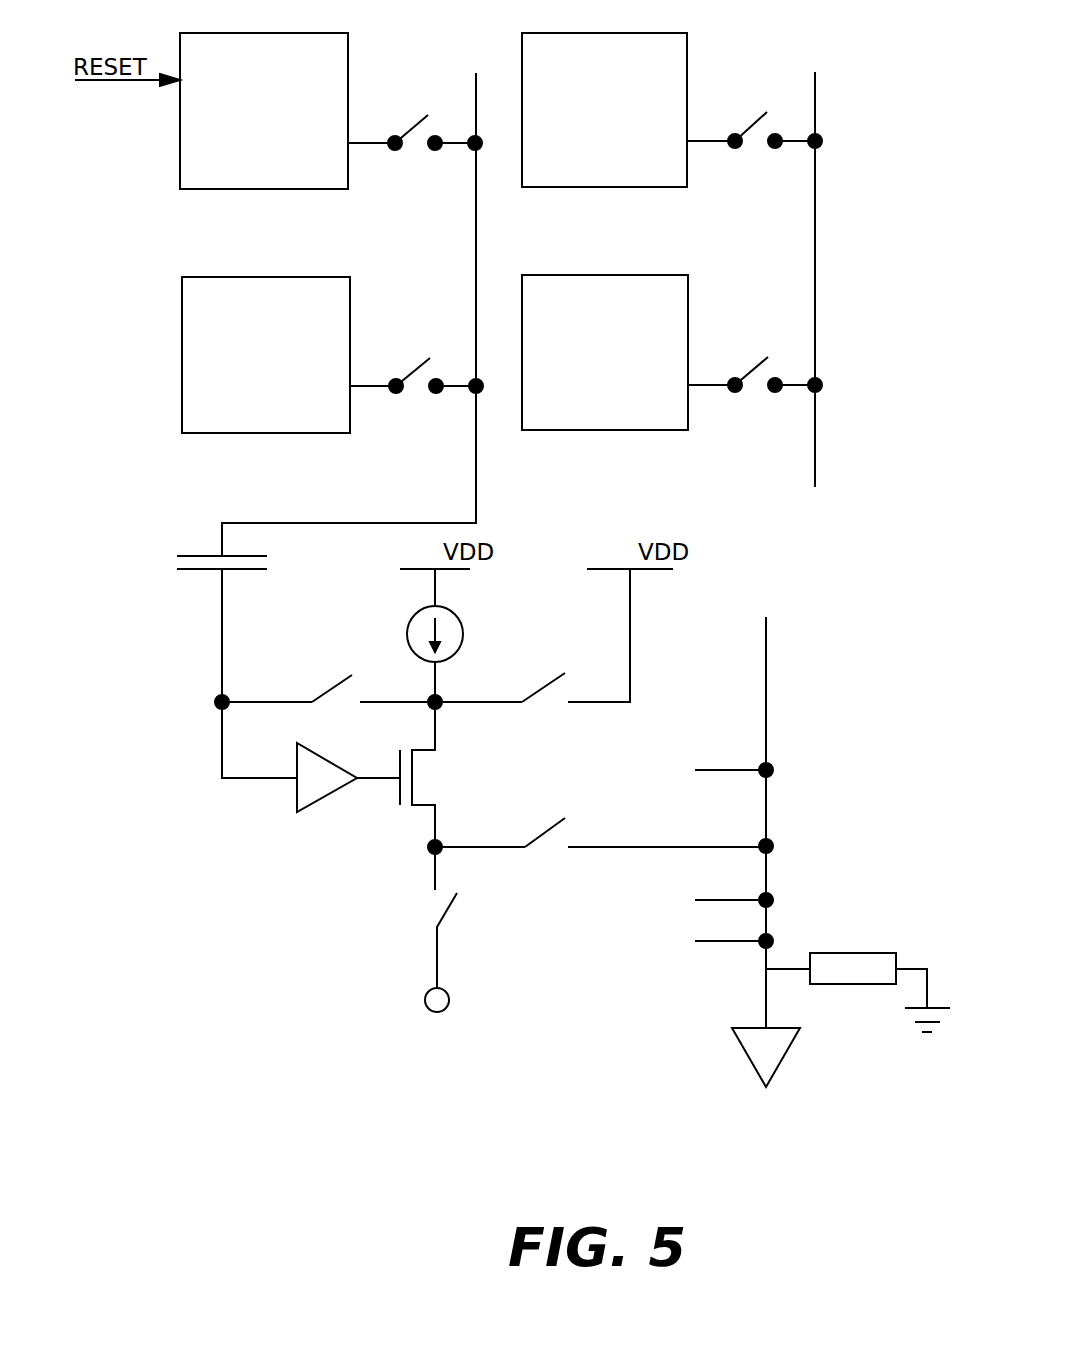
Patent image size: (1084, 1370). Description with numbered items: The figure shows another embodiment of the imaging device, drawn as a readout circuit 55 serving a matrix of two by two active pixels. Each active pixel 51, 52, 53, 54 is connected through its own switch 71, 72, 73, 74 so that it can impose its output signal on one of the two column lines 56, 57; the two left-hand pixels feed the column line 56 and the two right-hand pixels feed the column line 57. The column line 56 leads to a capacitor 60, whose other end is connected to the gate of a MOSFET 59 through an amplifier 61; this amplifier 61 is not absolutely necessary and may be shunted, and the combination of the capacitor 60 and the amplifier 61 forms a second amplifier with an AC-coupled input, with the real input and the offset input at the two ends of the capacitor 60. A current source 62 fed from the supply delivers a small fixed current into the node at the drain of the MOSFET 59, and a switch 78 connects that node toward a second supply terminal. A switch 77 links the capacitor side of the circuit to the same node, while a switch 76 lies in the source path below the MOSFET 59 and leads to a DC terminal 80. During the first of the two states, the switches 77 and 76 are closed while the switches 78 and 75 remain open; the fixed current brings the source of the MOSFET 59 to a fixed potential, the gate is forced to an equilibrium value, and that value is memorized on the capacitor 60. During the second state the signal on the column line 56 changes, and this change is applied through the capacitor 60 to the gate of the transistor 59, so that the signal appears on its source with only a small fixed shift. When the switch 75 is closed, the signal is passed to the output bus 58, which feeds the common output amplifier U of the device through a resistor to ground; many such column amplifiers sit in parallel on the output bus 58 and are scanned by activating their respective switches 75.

The active pixel 51 is at (317, 189).
The active pixel 52 is at (318, 433).
The active pixel 53 is at (657, 187).
The active pixel 54 is at (657, 430).
The readout circuit 55 is at (345, 970).
The column line 56 is at (476, 255).
The column line 57 is at (816, 255).
The output bus 58 is at (766, 720).
The MOSFET 59 is at (437, 782).
The capacitor 60 is at (193, 556).
The amplifier 61 is at (330, 795).
The current source 62 is at (463, 634).
The switch 71 is at (422, 120).
The switch 72 is at (420, 366).
The switch 73 is at (760, 118).
The switch 74 is at (758, 366).
The switch 75 is at (555, 828).
The switch 76 is at (458, 900).
The switch 77 is at (340, 683).
The switch 78 is at (558, 677).
The DC terminal 80 is at (440, 1012).